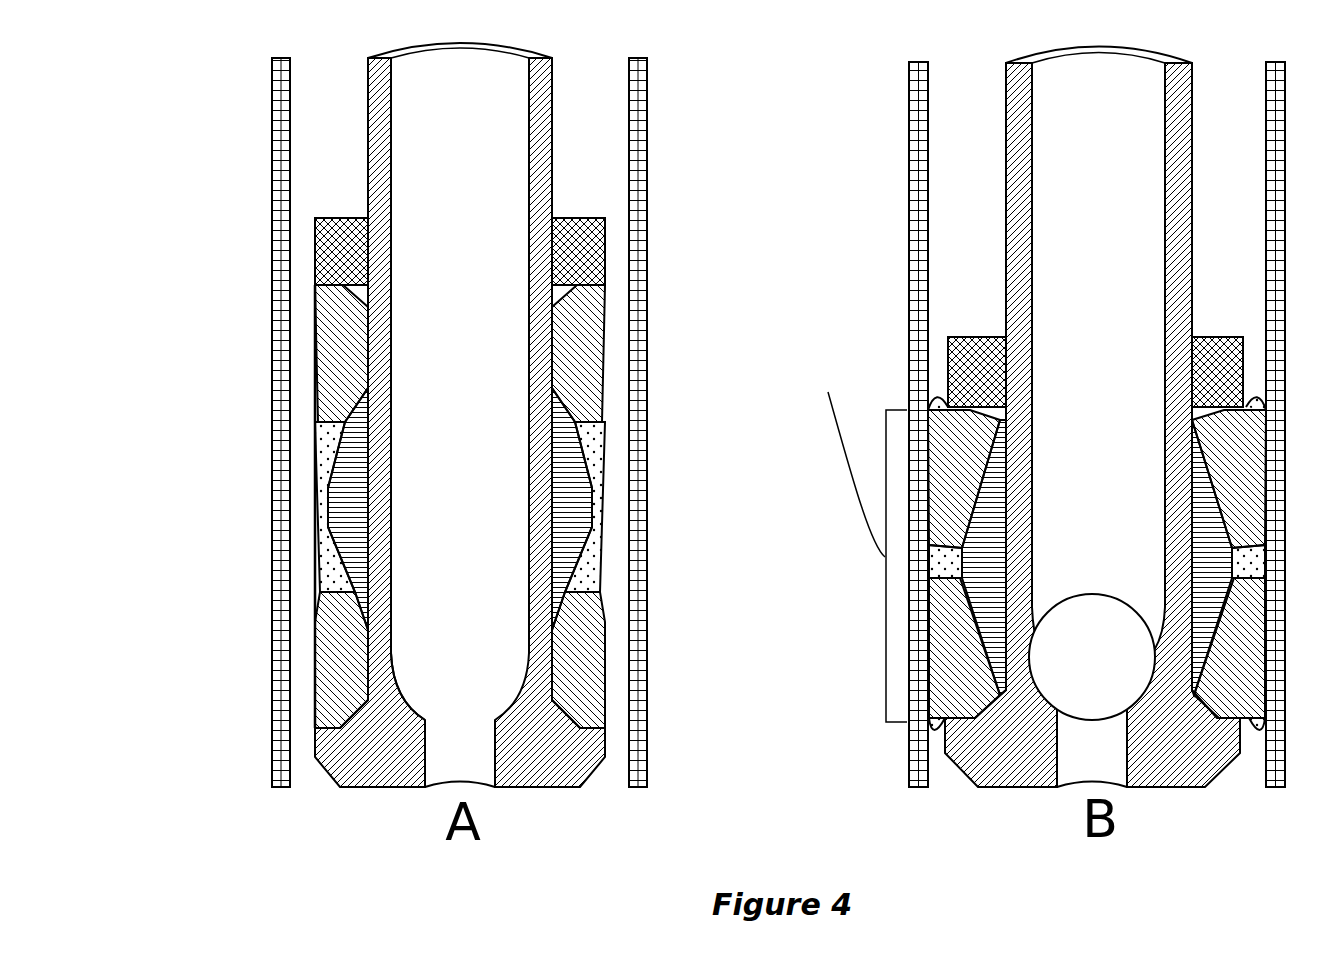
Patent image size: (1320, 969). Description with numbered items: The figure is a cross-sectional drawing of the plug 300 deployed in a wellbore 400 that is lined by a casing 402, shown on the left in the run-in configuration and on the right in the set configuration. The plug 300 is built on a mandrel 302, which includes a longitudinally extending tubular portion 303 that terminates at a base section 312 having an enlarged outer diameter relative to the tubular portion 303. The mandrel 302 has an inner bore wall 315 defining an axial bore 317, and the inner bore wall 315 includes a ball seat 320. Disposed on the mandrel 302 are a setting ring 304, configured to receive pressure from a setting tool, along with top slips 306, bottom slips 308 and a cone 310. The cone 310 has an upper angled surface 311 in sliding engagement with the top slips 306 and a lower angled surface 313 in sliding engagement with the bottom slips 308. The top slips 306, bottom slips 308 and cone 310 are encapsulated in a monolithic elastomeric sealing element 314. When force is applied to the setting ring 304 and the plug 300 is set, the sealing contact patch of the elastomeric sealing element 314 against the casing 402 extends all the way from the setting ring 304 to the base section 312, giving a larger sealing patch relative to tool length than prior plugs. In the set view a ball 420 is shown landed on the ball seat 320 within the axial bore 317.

The plug 300 is at (450, 397).
The mandrel 302 is at (488, 397).
The tubular portion 303 is at (380, 325).
The setting ring 304 is at (598, 245).
The top slips 306 is at (585, 338).
The bottom slips 308 is at (588, 625).
The cone 310 is at (352, 475).
The upper angled surface 311 is at (343, 442).
The base section 312 is at (593, 743).
The lower angled surface 313 is at (335, 550).
The elastomeric sealing element 314 is at (600, 555).
The inner bore wall 315 is at (527, 100).
The axial bore 317 is at (460, 228).
The ball seat 320 is at (407, 702).
The wellbore 400 is at (942, 396).
The casing 402 is at (648, 205).
The ball 420 is at (1092, 657).